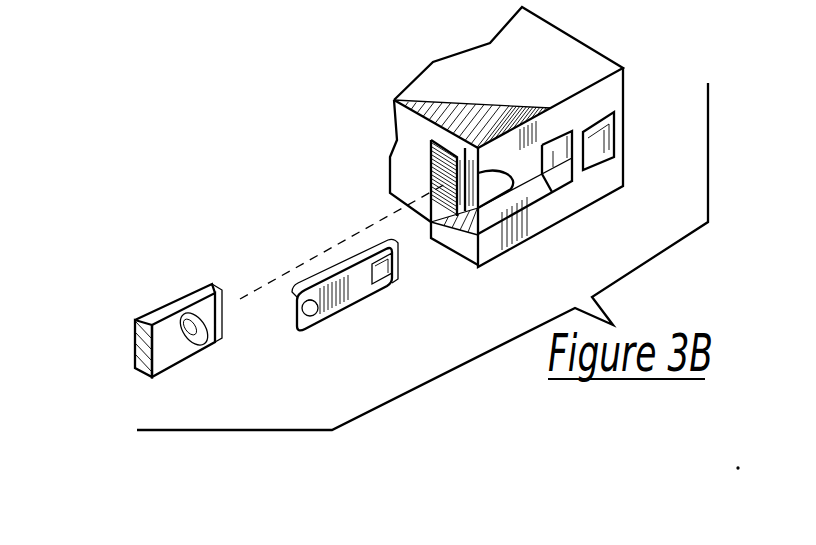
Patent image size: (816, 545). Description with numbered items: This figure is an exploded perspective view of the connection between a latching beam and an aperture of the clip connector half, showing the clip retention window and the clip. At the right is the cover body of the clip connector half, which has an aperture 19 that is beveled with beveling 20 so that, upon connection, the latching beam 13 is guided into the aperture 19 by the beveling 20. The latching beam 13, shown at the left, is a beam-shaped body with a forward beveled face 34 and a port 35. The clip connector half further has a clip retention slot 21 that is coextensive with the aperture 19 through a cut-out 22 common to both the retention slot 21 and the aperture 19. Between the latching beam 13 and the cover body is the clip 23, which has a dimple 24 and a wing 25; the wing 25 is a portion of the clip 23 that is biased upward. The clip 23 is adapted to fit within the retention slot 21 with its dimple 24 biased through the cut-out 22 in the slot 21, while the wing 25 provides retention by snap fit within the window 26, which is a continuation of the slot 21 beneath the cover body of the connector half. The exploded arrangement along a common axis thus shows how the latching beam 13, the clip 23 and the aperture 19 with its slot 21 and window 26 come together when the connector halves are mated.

The latching beam 13 is at (178, 302).
The aperture 19 is at (442, 175).
The beveling 20 is at (452, 140).
The clip retention slot 21 is at (544, 175).
The cut-out 22 is at (490, 203).
The clip 23 is at (345, 263).
The dimple 24 is at (311, 311).
The wing 25 is at (382, 275).
The window 26 is at (608, 148).
The forward beveled face 34 is at (227, 304).
The port 35 is at (193, 338).